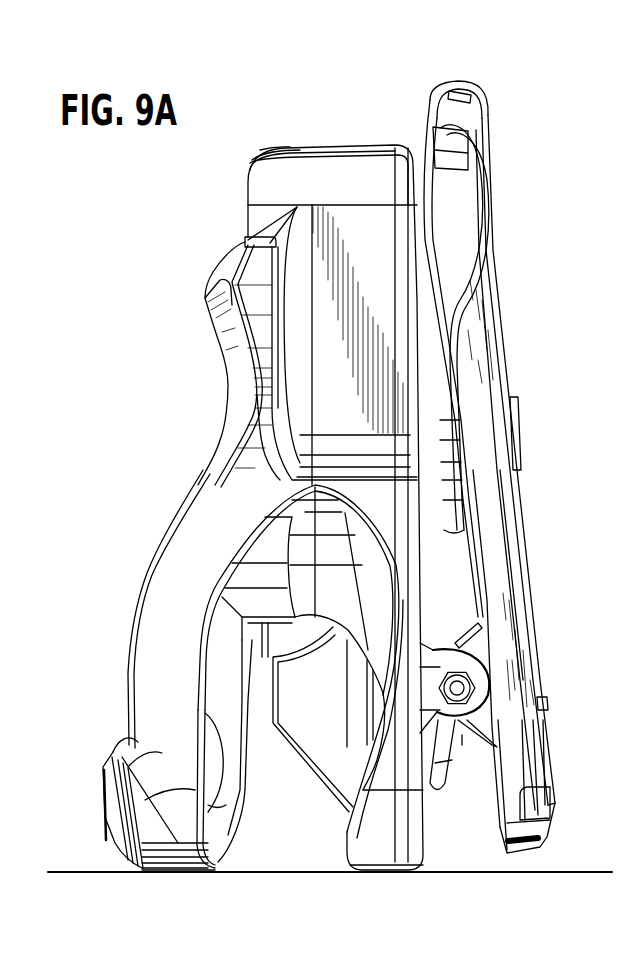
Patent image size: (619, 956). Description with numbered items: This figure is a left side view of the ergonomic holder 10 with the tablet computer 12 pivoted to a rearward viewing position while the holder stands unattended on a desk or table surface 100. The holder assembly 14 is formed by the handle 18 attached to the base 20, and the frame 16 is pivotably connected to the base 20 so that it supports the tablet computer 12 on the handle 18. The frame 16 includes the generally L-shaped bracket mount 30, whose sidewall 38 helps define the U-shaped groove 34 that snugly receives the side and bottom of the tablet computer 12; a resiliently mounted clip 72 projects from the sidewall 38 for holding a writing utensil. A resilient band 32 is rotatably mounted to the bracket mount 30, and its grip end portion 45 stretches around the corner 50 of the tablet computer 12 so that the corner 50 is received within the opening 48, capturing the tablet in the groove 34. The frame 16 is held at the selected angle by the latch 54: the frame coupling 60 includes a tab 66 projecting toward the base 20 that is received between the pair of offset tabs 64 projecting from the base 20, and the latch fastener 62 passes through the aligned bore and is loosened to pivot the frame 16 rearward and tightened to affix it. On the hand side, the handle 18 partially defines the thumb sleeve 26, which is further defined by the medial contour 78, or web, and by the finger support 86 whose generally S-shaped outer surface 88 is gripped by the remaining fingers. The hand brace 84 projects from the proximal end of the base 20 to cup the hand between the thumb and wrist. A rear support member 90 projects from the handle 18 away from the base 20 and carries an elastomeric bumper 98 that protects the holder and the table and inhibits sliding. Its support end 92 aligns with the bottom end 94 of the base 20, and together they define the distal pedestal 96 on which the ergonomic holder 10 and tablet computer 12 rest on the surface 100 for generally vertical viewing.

The ergonomic holder 10 is at (261, 111).
The tablet computer 12 is at (520, 524).
The holder assembly 14 is at (259, 150).
The frame 16 is at (562, 829).
The handle 18 is at (348, 143).
The base 20 is at (403, 143).
The thumb sleeve 26 is at (352, 600).
The bracket mount 30 is at (500, 817).
The band 32 is at (491, 142).
The groove 34 is at (521, 815).
The sidewall 38 is at (505, 598).
The grip end portion 45 is at (477, 103).
The opening 48 is at (462, 195).
The corner 50 is at (455, 140).
The latch 54 is at (465, 745).
The frame coupling 60 is at (470, 627).
The latch fastener 62 is at (437, 796).
The offset tabs 64 is at (442, 660).
The tab 66 is at (480, 727).
The clip 72 is at (517, 423).
The medial contour 78 is at (244, 751).
The hand brace 84 is at (312, 713).
The finger support 86 is at (173, 515).
The outer surface 88 is at (243, 388).
The rear support member 90 is at (117, 749).
The support end 92 is at (173, 874).
The bottom end 94 is at (390, 874).
The distal pedestal 96 is at (122, 865).
The bumper 98 is at (106, 794).
The desk or table surface 100 is at (280, 870).